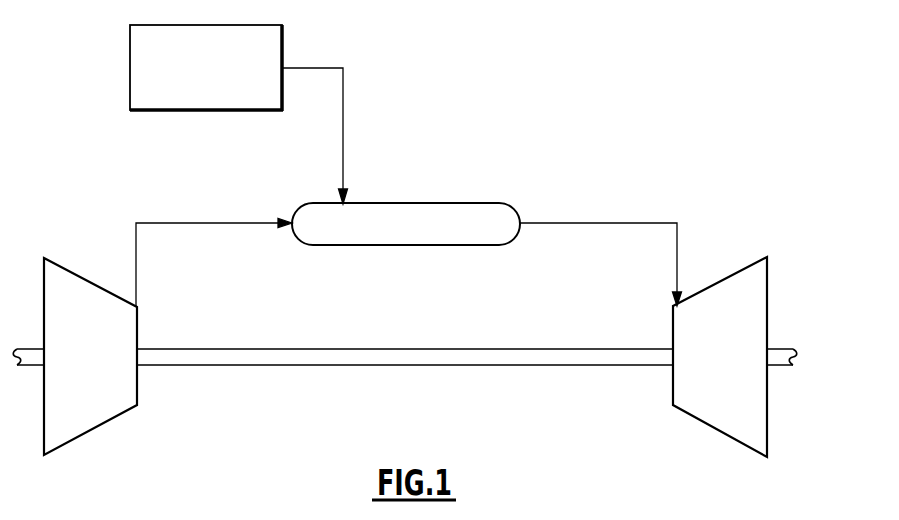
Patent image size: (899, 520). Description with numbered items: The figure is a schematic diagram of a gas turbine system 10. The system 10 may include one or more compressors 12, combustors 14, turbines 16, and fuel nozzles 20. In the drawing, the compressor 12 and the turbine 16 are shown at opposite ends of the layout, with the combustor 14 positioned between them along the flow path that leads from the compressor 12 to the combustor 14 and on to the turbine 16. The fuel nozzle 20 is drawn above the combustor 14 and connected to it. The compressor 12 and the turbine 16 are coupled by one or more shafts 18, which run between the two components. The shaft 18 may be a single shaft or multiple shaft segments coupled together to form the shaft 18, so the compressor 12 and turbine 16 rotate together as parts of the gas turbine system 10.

The gas turbine system 10 is at (666, 135).
The compressor 12 is at (90, 430).
The combustor 14 is at (418, 203).
The turbine 16 is at (767, 290).
The shaft 18 is at (433, 366).
The fuel nozzle 20 is at (282, 36).